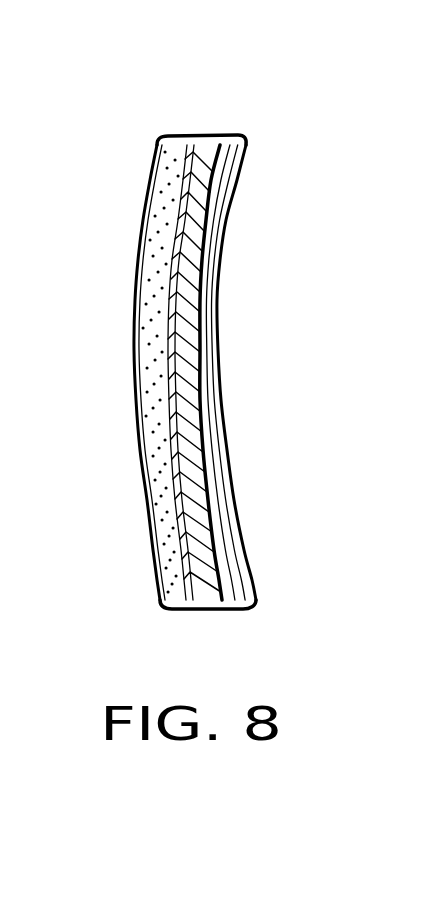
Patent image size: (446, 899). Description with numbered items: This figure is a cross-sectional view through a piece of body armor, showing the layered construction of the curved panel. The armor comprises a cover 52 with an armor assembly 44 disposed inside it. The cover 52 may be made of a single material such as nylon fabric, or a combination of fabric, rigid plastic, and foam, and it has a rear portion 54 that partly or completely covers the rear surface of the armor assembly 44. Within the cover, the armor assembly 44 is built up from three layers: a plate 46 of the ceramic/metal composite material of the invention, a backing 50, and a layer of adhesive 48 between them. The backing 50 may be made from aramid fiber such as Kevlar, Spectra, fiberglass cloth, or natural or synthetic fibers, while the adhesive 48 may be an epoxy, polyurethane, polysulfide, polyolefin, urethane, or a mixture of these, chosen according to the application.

The armor assembly 44 is at (126, 302).
The plate 46 is at (181, 136).
The adhesive 48 is at (192, 609).
The backing 50 is at (211, 609).
The cover 52 is at (147, 193).
The rear portion 54 is at (202, 393).